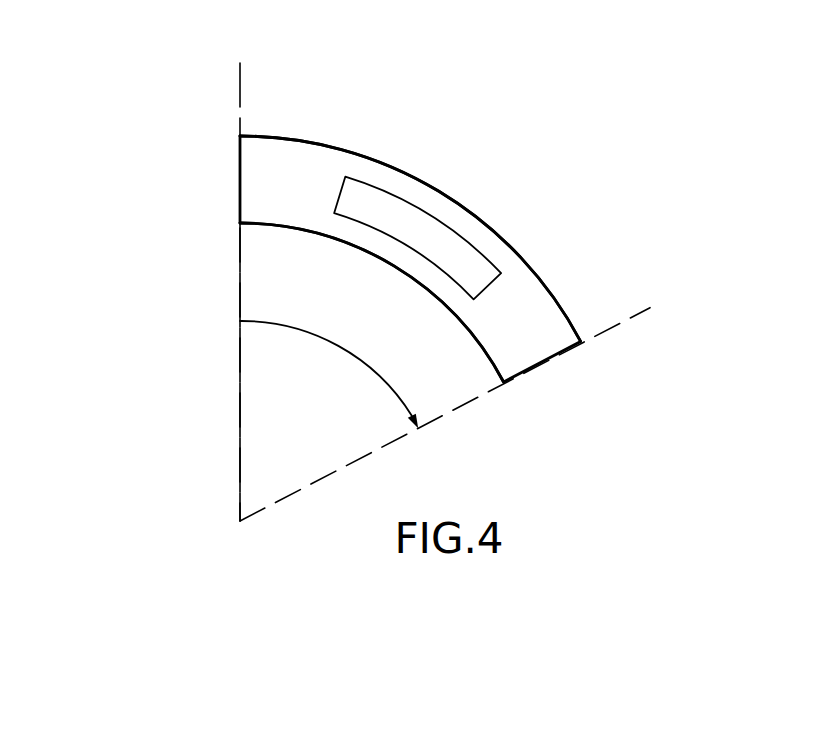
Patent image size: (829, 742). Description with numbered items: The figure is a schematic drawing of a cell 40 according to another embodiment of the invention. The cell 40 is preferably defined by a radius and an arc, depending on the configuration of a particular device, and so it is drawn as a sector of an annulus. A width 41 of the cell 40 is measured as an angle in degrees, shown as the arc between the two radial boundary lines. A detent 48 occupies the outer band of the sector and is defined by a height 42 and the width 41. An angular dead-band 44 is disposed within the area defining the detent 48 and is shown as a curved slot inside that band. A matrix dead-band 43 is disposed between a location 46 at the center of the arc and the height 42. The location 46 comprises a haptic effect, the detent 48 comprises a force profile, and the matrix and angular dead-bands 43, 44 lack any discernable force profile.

The cell 40 is at (569, 431).
The width 41 is at (323, 335).
The height 42 is at (228, 225).
The matrix dead-band 43 is at (230, 520).
The angular dead-band 44 is at (331, 175).
The location 46 is at (223, 537).
The detent 48 is at (527, 293).